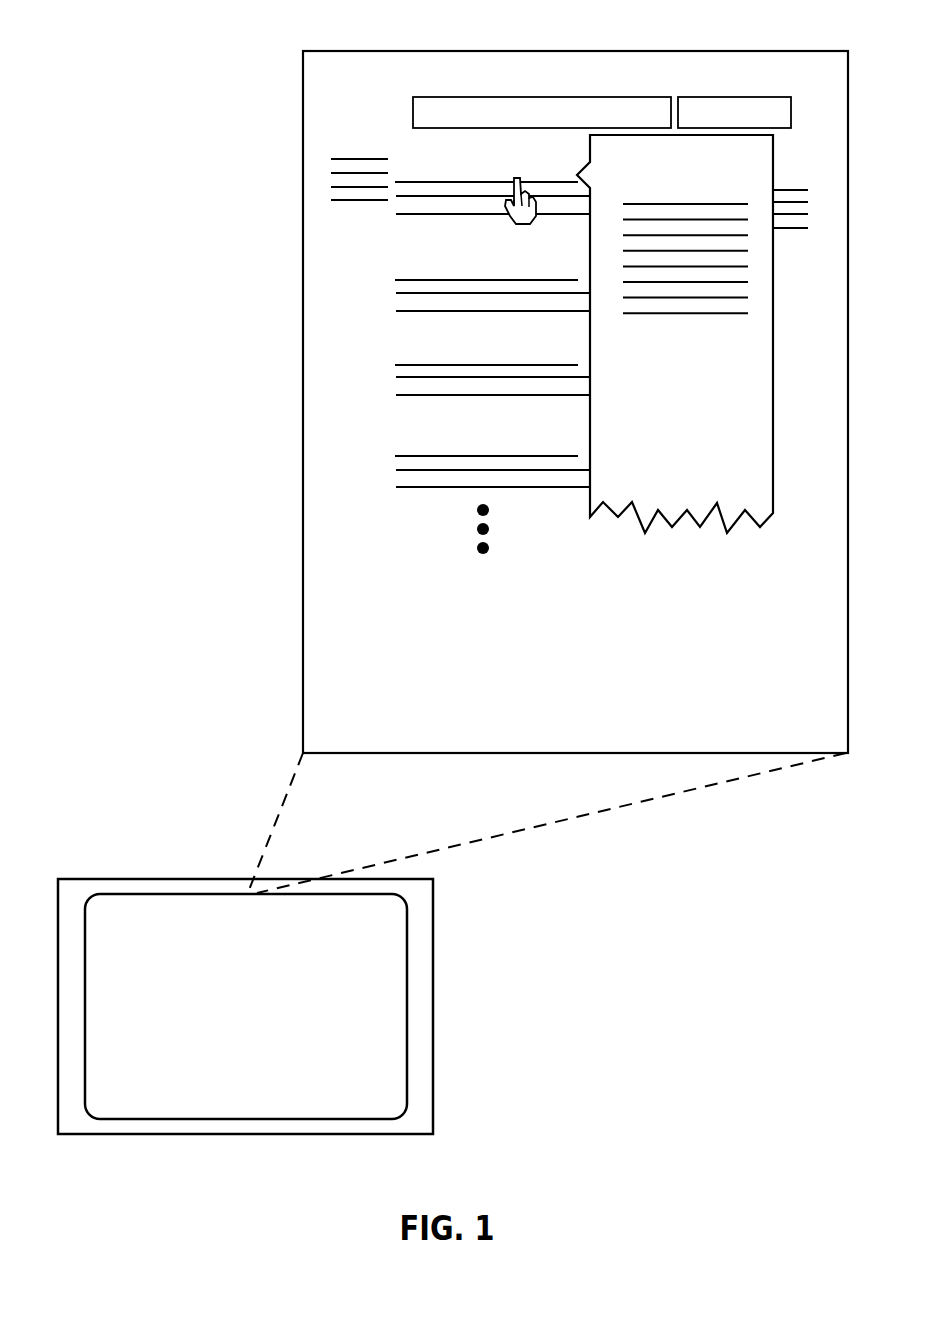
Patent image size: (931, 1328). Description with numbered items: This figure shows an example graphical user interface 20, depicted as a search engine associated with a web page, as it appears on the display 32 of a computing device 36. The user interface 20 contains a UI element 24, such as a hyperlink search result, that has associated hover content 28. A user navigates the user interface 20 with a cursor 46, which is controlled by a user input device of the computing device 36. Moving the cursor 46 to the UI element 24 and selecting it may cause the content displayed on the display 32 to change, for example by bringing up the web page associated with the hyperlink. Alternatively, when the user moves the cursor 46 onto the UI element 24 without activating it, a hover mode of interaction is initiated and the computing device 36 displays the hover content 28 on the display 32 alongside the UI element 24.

The graphical user interface 20 is at (724, 70).
The UI element 24 is at (398, 156).
The hover content 28 is at (744, 166).
The display 32 is at (235, 1031).
The computing device 36 is at (297, 1006).
The cursor 46 is at (508, 219).